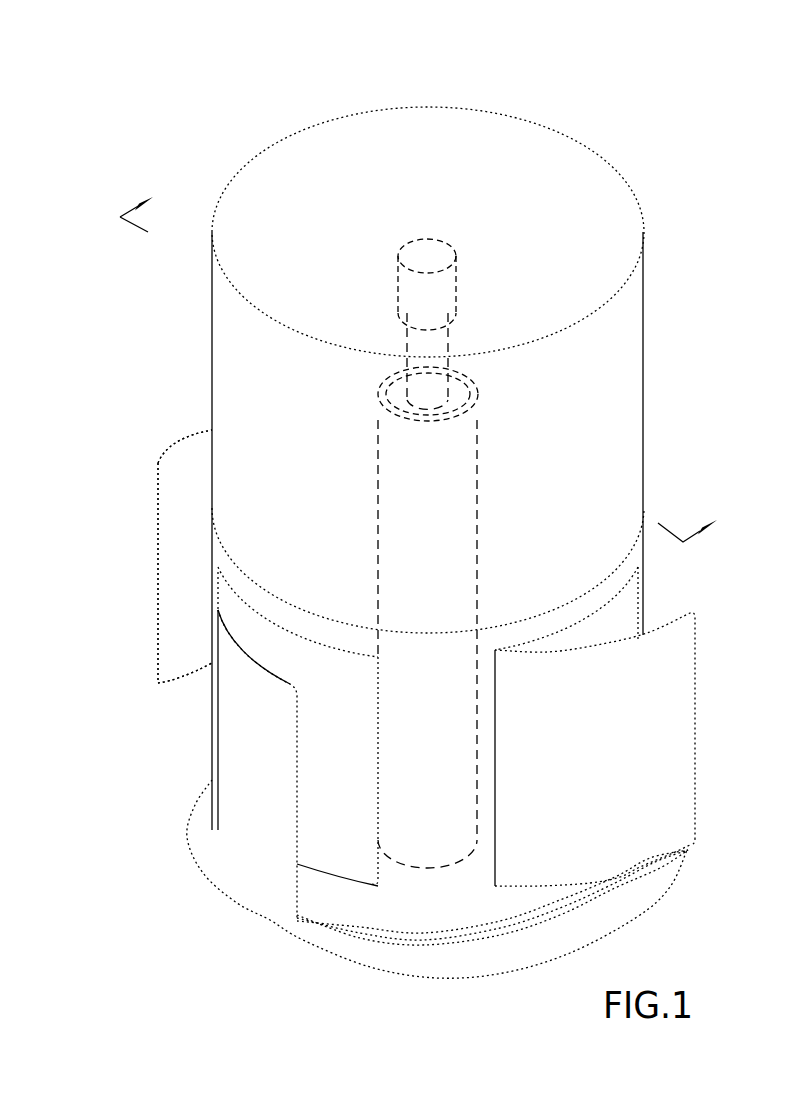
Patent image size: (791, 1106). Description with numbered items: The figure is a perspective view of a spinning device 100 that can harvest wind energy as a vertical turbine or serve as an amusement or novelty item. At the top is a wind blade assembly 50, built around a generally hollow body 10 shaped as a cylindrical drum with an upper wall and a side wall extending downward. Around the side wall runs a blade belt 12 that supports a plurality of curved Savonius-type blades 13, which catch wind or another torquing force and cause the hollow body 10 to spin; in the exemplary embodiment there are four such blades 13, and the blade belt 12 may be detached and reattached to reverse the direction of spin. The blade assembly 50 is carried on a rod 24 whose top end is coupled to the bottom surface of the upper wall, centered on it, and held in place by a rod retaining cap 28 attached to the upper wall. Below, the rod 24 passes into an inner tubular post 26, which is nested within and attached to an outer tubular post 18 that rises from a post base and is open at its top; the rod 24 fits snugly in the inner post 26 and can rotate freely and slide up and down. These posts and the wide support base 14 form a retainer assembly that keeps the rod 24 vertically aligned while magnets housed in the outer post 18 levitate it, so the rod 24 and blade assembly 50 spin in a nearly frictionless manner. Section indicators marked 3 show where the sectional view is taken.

The spinning device 100 is at (247, 55).
The section line 3- 3 is at (430, 359).
The hollow body 10 is at (222, 363).
The blade belt 12 is at (452, 645).
The blades 13 is at (175, 588).
The wide support base 14 is at (247, 920).
The outer tubular post 18 is at (380, 513).
The rod 24 is at (398, 337).
The inner tubular post 26 is at (470, 375).
The rod retaining cap 28 is at (463, 280).
The wind blade assembly 50 is at (112, 412).